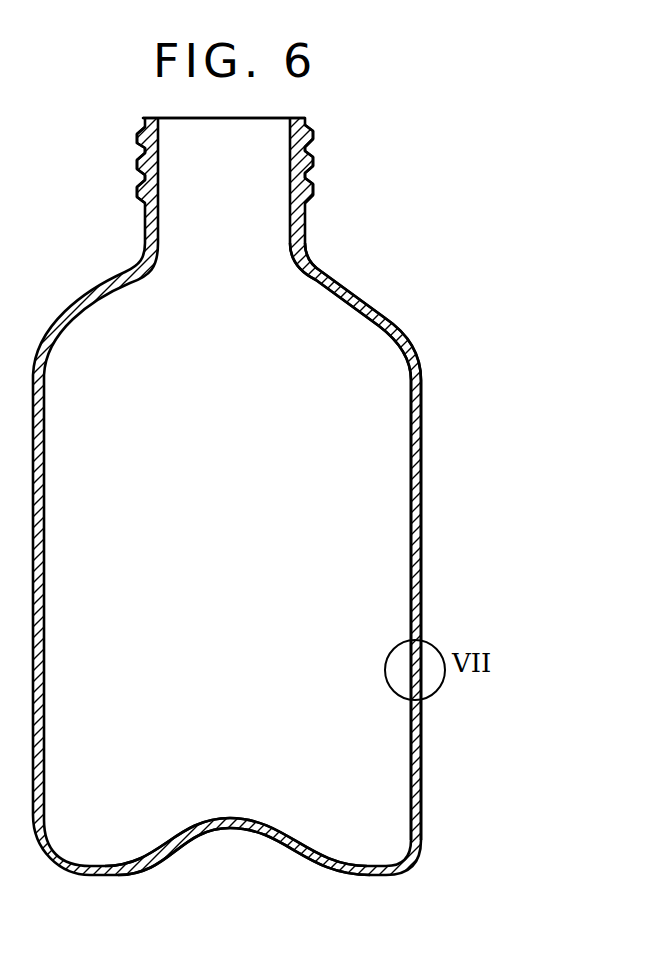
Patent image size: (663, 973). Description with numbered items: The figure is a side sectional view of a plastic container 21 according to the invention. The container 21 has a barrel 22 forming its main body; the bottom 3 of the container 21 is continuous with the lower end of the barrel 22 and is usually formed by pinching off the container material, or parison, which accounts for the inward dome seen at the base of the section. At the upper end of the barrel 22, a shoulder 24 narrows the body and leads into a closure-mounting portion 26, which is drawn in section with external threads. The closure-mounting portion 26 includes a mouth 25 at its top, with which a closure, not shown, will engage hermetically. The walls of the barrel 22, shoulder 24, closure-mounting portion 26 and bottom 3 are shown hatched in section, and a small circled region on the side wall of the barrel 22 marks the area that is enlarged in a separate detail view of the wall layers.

The container 21 is at (432, 456).
The barrel 22 is at (423, 565).
The shoulder 24 is at (357, 283).
The mouth 25 is at (303, 140).
The closure-mounting portion 26 is at (325, 188).
The bottom wall 3 is at (292, 850).